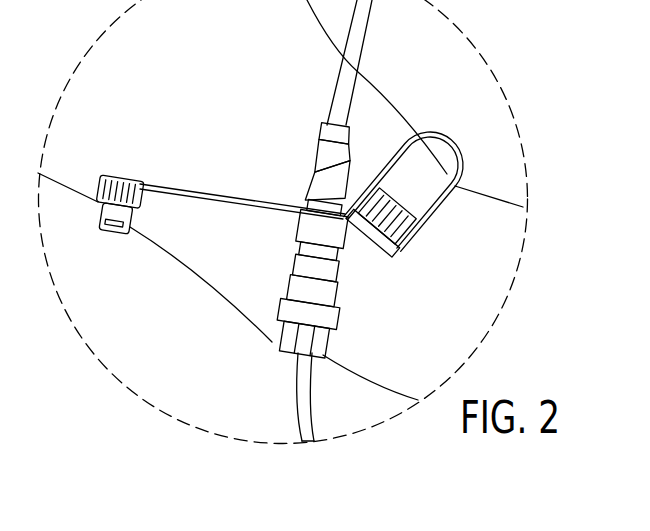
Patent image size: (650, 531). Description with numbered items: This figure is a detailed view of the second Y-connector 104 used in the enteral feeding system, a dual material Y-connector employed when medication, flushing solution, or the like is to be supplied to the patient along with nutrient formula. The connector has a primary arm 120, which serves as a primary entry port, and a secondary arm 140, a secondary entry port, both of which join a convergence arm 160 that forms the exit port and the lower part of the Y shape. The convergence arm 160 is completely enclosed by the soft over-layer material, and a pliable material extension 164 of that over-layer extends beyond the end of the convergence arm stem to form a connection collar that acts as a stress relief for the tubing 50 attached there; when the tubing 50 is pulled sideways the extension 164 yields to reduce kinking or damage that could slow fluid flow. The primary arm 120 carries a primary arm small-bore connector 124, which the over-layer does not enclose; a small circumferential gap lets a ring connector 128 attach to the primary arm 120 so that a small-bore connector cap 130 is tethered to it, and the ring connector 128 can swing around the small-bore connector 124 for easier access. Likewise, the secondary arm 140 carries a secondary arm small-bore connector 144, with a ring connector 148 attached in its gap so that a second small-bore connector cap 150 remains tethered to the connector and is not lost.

The tubing 50 is at (368, 27).
The second Y-connector 104 is at (230, 135).
The primary arm 120 is at (296, 223).
The primary arm small-bore connector 124 is at (347, 237).
The ring connector 128 is at (170, 183).
The small-bore connector cap 130 is at (142, 200).
The secondary arm 140 is at (431, 129).
The secondary arm small-bore connector 144 is at (365, 228).
The ring connector 148 is at (463, 162).
The second small-bore connector cap 150 is at (383, 233).
The convergence arm 160 is at (352, 148).
The pliable material extension 164 is at (318, 133).